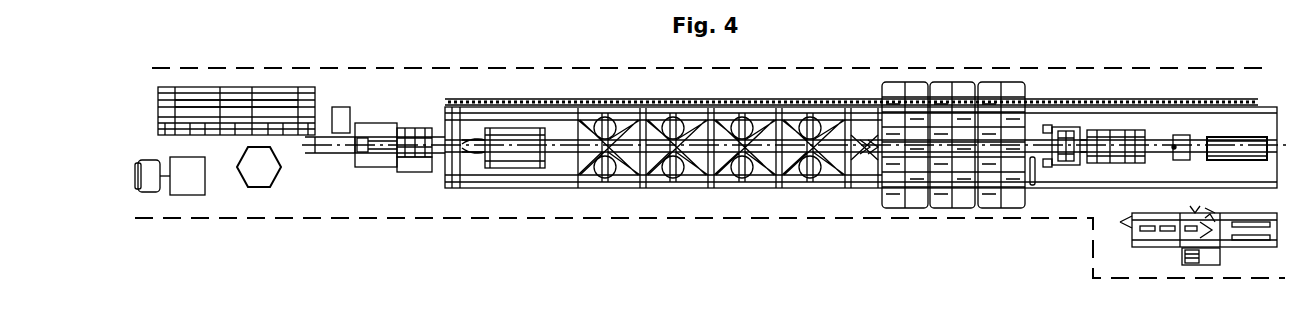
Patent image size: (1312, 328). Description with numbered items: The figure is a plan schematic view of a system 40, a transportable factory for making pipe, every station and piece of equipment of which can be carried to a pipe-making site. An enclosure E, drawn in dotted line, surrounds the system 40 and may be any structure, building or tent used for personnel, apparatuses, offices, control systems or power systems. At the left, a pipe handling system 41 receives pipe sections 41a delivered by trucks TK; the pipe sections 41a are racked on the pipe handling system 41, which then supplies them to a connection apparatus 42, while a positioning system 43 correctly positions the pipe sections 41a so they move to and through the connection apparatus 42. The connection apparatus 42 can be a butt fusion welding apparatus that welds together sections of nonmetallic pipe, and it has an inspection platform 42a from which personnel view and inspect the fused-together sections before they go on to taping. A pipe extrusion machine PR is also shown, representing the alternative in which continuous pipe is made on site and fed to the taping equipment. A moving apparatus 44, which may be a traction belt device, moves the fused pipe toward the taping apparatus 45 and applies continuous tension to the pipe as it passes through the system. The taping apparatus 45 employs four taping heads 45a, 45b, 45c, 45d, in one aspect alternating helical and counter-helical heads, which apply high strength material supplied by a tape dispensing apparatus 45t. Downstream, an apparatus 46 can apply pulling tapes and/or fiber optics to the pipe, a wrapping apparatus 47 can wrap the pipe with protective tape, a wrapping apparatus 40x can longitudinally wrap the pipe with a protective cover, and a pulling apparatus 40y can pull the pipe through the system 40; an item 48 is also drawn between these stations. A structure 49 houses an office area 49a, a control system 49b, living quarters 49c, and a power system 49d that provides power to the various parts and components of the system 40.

The system 40 is at (609, 59).
The wrapping apparatus 40x is at (1185, 135).
The pulling apparatus 40y is at (1262, 137).
The pipe handling system 41 is at (194, 92).
The pipe sections 41a is at (288, 46).
The connection apparatus 42 is at (404, 124).
The inspection platform 42a is at (420, 168).
The positioning system 43 is at (356, 88).
The moving apparatus 44 is at (520, 190).
The taping apparatus 45 is at (745, 186).
The taping head 45a is at (607, 190).
The taping head 45b is at (675, 188).
The taping head 45c is at (730, 186).
The taping head 45d is at (836, 188).
The tape dispensing apparatus 45t is at (955, 210).
The apparatus 46 is at (1033, 186).
The wrapping apparatus 47 is at (1075, 168).
The tensioner 48 is at (1120, 130).
The structure 49 is at (1132, 232).
The office area 49a is at (1138, 247).
The control system 49b is at (1190, 240).
The living quarters 49c is at (1270, 247).
The power system 49d is at (1200, 262).
The trucks TK is at (158, 139).
The pipe extrusion machine PR is at (276, 184).
The enclosure E is at (364, 68).